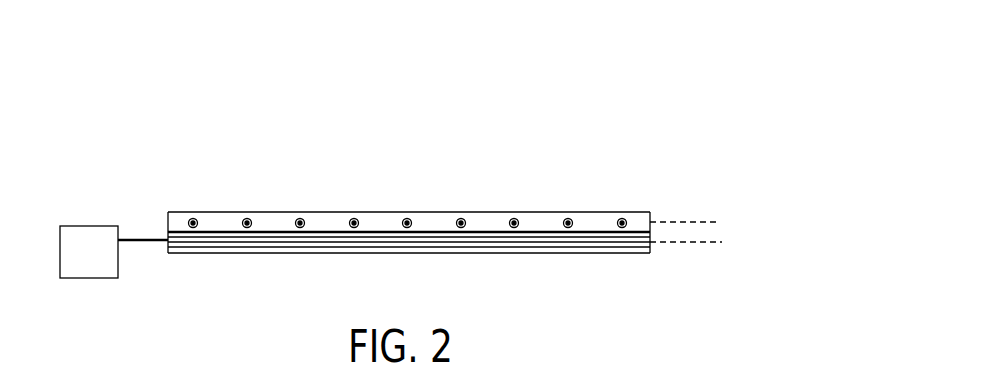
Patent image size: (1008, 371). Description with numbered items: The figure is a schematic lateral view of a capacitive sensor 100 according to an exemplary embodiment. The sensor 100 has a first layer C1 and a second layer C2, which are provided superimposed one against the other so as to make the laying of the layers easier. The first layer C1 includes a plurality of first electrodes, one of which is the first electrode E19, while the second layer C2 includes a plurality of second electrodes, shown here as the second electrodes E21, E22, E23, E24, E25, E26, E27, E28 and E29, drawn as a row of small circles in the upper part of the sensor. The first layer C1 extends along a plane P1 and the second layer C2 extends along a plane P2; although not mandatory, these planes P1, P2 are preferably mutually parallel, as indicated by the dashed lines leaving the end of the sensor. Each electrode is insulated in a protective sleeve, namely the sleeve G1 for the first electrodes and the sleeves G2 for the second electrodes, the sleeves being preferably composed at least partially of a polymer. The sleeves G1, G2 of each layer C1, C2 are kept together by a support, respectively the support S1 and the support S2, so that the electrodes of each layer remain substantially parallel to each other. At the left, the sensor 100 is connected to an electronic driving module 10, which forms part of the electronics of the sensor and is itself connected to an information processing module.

The electronic driving module 10 is at (85, 226).
The sensor 100 is at (653, 114).
The support S1 is at (213, 253).
The support S2 is at (218, 212).
The first layer C1 is at (568, 256).
The second layer C2 is at (642, 212).
The protective sleeve G1 is at (440, 245).
The protective sleeve G2 is at (190, 220).
The first electrode E19 is at (635, 245).
The second electrode E21 is at (190, 219).
The second electrode E22 is at (244, 219).
The second electrode E23 is at (298, 219).
The second electrode E24 is at (351, 219).
The second electrode E25 is at (404, 219).
The second electrode E26 is at (458, 219).
The second electrode E27 is at (511, 219).
The second electrode E28 is at (565, 219).
The second electrode E29 is at (619, 219).
The plane P1 is at (732, 236).
The plane P2 is at (724, 210).